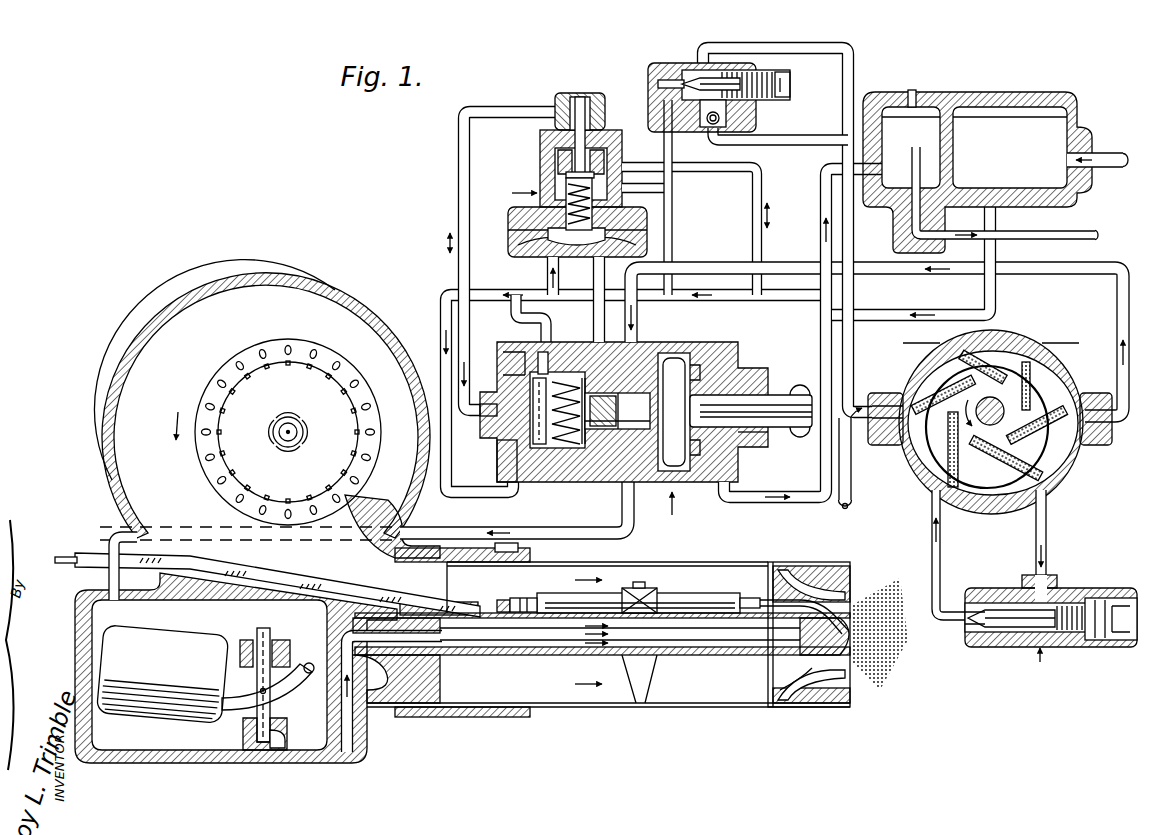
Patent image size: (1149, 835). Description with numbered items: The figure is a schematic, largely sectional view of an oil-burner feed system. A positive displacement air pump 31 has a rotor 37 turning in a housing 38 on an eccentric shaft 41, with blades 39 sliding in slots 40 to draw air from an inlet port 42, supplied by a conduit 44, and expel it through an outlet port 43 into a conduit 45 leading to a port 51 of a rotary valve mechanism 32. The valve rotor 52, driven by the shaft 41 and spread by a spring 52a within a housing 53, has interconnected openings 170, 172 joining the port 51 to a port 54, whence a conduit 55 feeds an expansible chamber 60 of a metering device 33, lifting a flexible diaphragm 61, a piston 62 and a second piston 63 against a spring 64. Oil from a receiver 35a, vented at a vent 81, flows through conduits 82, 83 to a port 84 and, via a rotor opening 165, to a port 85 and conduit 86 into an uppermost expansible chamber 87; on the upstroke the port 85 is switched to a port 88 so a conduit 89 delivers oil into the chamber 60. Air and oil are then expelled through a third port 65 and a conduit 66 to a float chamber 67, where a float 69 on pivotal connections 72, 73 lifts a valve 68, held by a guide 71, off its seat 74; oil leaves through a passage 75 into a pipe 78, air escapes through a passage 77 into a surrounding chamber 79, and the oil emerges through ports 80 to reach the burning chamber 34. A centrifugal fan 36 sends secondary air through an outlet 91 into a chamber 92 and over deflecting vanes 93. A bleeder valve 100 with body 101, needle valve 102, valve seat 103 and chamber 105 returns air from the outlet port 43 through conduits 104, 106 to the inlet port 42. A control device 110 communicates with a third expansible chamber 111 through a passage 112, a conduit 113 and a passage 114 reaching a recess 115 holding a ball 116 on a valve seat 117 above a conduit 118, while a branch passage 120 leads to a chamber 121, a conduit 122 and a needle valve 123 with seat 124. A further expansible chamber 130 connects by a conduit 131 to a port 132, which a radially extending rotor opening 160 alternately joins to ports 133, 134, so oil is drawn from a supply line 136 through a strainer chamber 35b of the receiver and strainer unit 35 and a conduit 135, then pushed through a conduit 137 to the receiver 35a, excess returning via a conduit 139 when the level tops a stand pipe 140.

The air pump 31 is at (1082, 497).
The valve mechanism 32 is at (682, 534).
The metering device 33 is at (478, 202).
The burning chamber 34 is at (874, 639).
The receiver and strainer unit 35 is at (975, 92).
The receiver 35a is at (911, 147).
The oil strainer chamber 35b is at (1010, 147).
The centrifugal fan 36 is at (302, 276).
The rotor 37 is at (1045, 446).
The housing 38 is at (972, 500).
The blades 39 is at (1022, 488).
The slots 40 is at (950, 430).
The shaft 41 is at (790, 395).
The inlet port 42 is at (910, 449).
The outlet port 43 is at (1065, 380).
The conduit 44 is at (905, 439).
The conduit 45 is at (800, 268).
The port 51 is at (638, 360).
The rotor 52 is at (578, 450).
The spring 52a is at (565, 440).
The housing 53 is at (614, 470).
The port 54 is at (594, 336).
The conduit 55 is at (592, 279).
The expansible chamber 60 is at (640, 246).
The flexible diaphragm 61 is at (612, 235).
The piston 62 is at (530, 222).
The second piston 63 is at (566, 175).
The spring 64 is at (566, 160).
The third port 65 is at (635, 490).
The conduit 66 is at (462, 531).
The float chamber 67 is at (108, 560).
The valve 68 is at (260, 740).
The float 69 is at (159, 669).
The guide 71 is at (242, 640).
The pivotal connection 72 is at (275, 690).
The pivotal connection 73 is at (260, 691).
The seat 74 is at (283, 748).
The passage 75 is at (347, 752).
The passage 77 is at (332, 579).
The conduit 78 is at (560, 642).
The chamber 79 is at (516, 655).
The ports 80 is at (845, 618).
The vent 81 is at (913, 92).
The conduit 82 is at (820, 201).
The conduit 83 is at (440, 318).
The port 84 is at (497, 452).
The port 85 is at (480, 428).
The conduit 86 is at (470, 333).
The expansible chamber 87 is at (580, 104).
The port 88 is at (507, 380).
The conduit 89 is at (512, 317).
The outlet 91 is at (398, 548).
The chamber 92 is at (545, 596).
The deflecting vanes 93 is at (812, 578).
The bleeder valve 100 is at (1026, 692).
The body portion 101 is at (1091, 641).
The needle valve 102 is at (1010, 629).
The valve seat 103 is at (985, 605).
The conduit 104 is at (1047, 538).
The chamber 105 is at (982, 628).
The conduit 106 is at (932, 551).
The control device 110 is at (750, 62).
The third expansible chamber 111 is at (520, 245).
The passage 112 is at (628, 205).
The conduit 113 is at (665, 183).
The passage 114 is at (664, 122).
The recess 115 is at (730, 112).
The ball 116 is at (722, 121).
The valve seat 117 is at (708, 133).
The conduit 118 is at (849, 224).
The passage 120 is at (660, 84).
The chamber 121 is at (688, 60).
The conduit 122 is at (726, 42).
The needle valve 123 is at (770, 73).
The valve seat 124 is at (690, 80).
The expansible chamber 130 is at (603, 156).
The conduit 131 is at (753, 206).
The port 132 is at (695, 362).
The port 133 is at (670, 358).
The port 134 is at (742, 460).
The conduit 135 is at (876, 315).
The oil supply line 136 is at (1102, 153).
The conduit 137 is at (750, 504).
The conduit 139 is at (1012, 231).
The stand pipe 140 is at (921, 166).
The radially extending opening 160 is at (622, 410).
The valve rotor opening 165 is at (543, 352).
The valve rotor opening 170 is at (603, 409).
The opening 172 is at (612, 418).